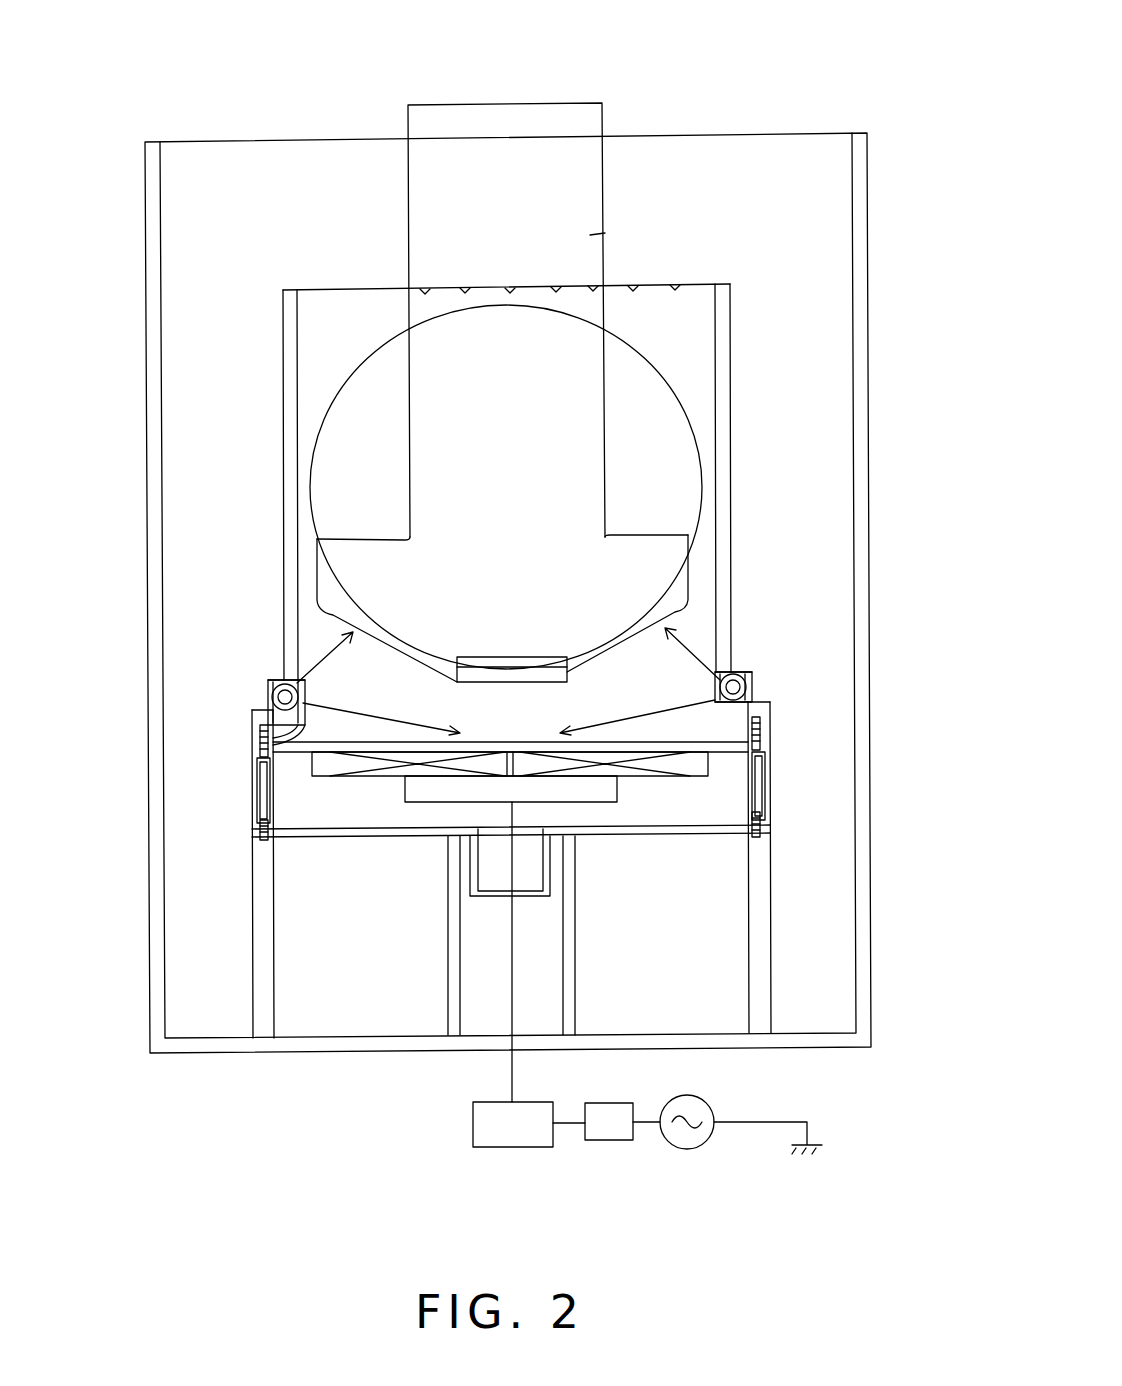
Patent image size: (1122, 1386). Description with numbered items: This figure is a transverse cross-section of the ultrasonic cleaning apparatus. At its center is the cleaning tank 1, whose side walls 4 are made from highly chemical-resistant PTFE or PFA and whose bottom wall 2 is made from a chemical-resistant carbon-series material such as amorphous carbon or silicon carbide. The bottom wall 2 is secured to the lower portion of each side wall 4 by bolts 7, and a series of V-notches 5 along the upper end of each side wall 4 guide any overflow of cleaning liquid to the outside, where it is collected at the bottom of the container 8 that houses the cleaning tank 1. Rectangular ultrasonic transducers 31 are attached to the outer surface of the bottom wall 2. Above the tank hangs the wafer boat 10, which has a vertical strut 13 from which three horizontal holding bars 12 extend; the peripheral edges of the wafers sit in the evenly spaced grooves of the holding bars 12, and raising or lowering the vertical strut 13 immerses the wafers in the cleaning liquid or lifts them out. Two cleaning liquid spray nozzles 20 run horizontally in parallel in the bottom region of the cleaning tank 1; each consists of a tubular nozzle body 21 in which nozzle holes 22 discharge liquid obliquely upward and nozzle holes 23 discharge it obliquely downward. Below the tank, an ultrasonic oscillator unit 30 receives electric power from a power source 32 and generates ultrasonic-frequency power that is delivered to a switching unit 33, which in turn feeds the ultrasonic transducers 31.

The cleaning tank 1 is at (732, 282).
The bottom wall 2 is at (765, 708).
The side walls 4 is at (290, 322).
The V-notches 5 is at (378, 290).
The bolts 7 is at (258, 729).
The container 8 is at (863, 157).
The wafer boat 10 is at (605, 100).
The holding bars 12 is at (323, 579).
The vertical strut 13 is at (605, 233).
The cleaning liquid spray nozzles 20 is at (265, 694).
The tubular nozzle body 21 is at (252, 717).
The nozzle holes 22 is at (270, 680).
The nozzle holes 23 is at (258, 748).
The ultrasonic oscillator unit 30 is at (617, 1132).
The ultrasonic transducers 31 is at (357, 777).
The power source 32 is at (687, 1145).
The switching unit 33 is at (518, 1137).